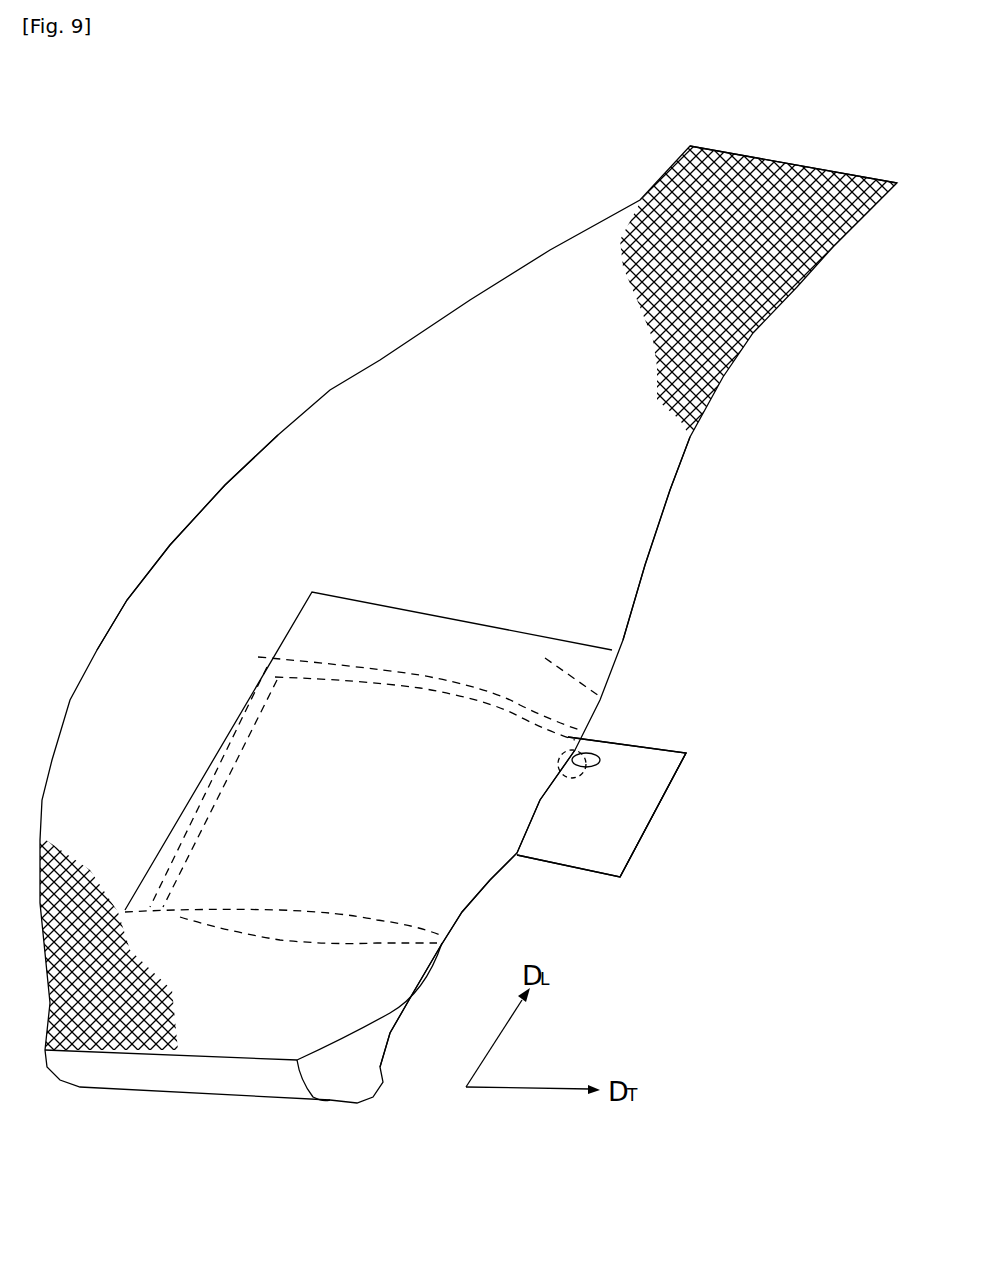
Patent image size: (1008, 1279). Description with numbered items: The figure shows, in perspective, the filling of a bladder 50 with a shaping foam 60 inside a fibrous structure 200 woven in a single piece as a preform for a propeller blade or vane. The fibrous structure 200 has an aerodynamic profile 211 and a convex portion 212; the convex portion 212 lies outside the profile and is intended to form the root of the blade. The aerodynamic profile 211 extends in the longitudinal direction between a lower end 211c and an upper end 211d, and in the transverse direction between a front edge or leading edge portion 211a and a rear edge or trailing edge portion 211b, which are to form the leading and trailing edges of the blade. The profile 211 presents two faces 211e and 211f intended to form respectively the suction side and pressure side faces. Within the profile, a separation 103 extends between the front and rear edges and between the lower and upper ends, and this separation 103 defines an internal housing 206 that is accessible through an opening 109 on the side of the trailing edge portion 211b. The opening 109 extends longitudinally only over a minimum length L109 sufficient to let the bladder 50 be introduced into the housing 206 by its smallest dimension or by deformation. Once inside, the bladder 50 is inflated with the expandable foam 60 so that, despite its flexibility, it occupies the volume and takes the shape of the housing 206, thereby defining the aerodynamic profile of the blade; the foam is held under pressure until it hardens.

The fibrous structure 200 is at (468, 624).
The aerodynamic profile 211 is at (292, 472).
The front edge or leading edge portion 211a is at (127, 600).
The rear edge or trailing edge portion 211b is at (691, 538).
The lower end 211c is at (443, 953).
The upper end 211d is at (800, 163).
The face 211e is at (577, 562).
The face 211f is at (602, 699).
The convex portion 212 is at (106, 1078).
The separation 103 is at (472, 622).
The internal housing 206 is at (283, 867).
The shaping foam 60 is at (600, 760).
The opening 109 is at (566, 772).
The minimum length of the opening L109 is at (655, 811).
The bladder 50 is at (500, 877).